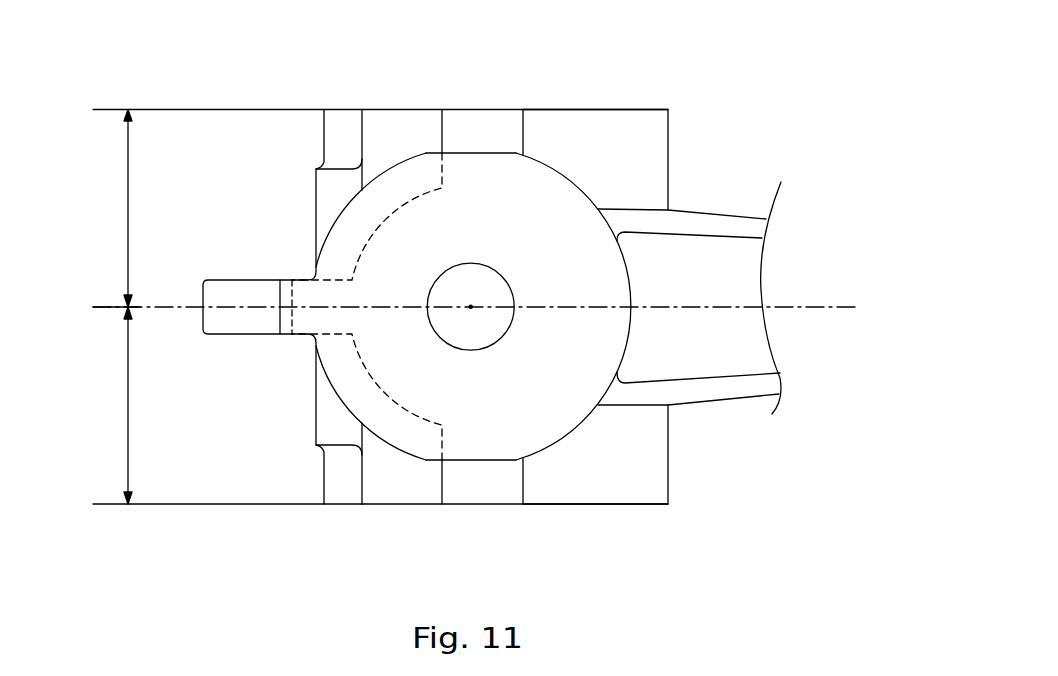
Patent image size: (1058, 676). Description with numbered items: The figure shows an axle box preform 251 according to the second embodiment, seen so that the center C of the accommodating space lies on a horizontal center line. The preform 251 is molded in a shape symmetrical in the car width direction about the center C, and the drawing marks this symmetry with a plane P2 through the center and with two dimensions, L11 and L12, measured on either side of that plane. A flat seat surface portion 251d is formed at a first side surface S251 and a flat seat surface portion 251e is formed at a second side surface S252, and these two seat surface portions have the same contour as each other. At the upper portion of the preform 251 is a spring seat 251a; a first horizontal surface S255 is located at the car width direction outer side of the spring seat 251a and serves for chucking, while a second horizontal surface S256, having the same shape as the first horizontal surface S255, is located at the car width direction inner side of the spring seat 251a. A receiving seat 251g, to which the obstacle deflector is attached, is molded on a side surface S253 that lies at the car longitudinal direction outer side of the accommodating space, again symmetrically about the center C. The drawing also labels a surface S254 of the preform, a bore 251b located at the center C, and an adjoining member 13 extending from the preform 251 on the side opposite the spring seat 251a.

The axle box preform 251 is at (668, 126).
The spring seat 251a is at (308, 322).
The through hole 251b is at (473, 284).
The flat seat surface portion 251d is at (413, 507).
The flat seat surface portion 251e is at (403, 107).
The receiving seat 251g is at (325, 190).
The connecting rod 13 is at (740, 223).
The first side surface S251 is at (563, 507).
The second side surface S252 is at (632, 108).
The side surface S253 is at (358, 131).
The spherical surface S254 is at (533, 187).
The first horizontal surface S255 is at (480, 495).
The second horizontal surface S256 is at (482, 117).
The center of the accommodating space C is at (472, 320).
The plane P2 is at (115, 305).
The length L11 is at (201, 405).
The length L12 is at (201, 209).